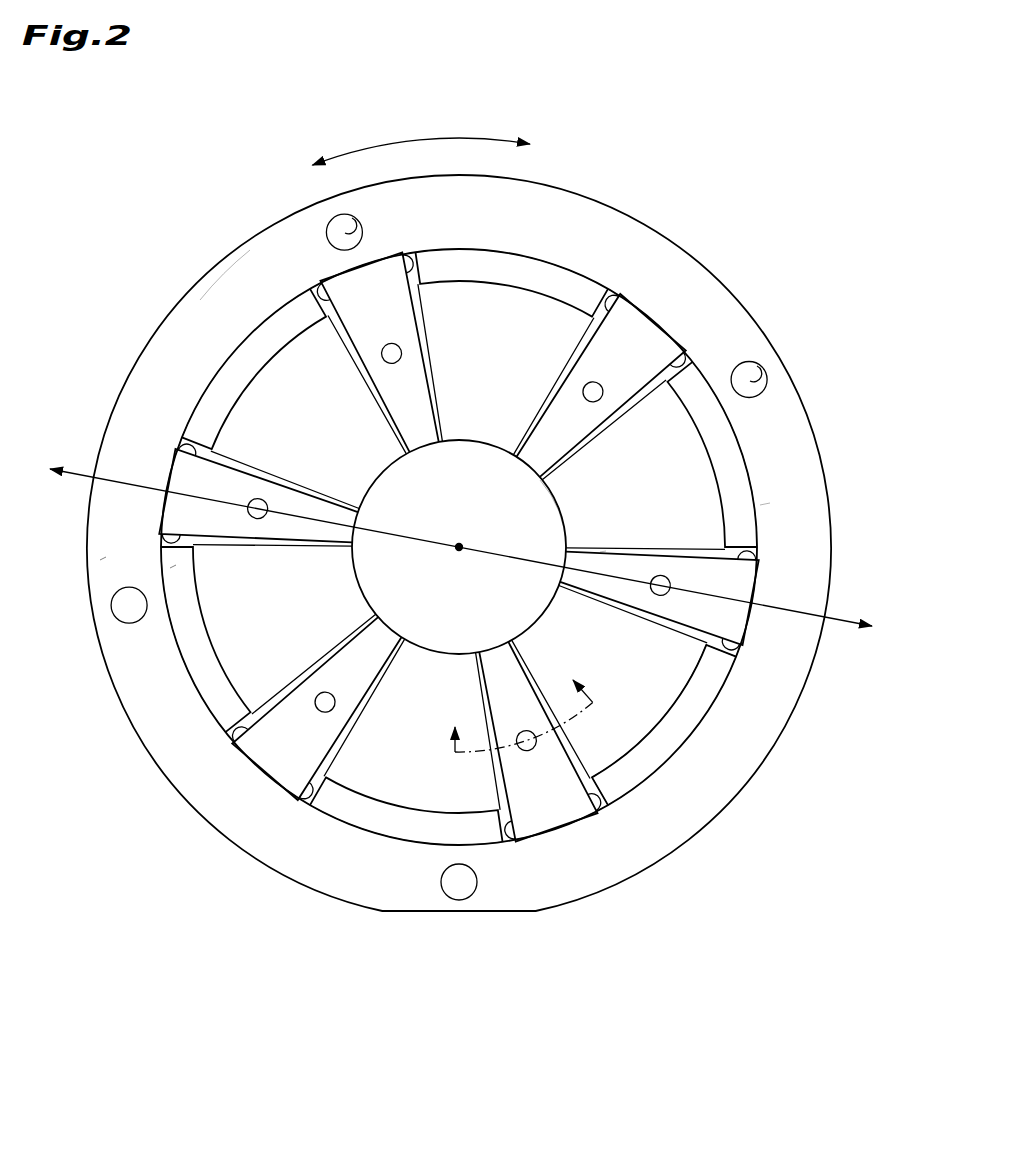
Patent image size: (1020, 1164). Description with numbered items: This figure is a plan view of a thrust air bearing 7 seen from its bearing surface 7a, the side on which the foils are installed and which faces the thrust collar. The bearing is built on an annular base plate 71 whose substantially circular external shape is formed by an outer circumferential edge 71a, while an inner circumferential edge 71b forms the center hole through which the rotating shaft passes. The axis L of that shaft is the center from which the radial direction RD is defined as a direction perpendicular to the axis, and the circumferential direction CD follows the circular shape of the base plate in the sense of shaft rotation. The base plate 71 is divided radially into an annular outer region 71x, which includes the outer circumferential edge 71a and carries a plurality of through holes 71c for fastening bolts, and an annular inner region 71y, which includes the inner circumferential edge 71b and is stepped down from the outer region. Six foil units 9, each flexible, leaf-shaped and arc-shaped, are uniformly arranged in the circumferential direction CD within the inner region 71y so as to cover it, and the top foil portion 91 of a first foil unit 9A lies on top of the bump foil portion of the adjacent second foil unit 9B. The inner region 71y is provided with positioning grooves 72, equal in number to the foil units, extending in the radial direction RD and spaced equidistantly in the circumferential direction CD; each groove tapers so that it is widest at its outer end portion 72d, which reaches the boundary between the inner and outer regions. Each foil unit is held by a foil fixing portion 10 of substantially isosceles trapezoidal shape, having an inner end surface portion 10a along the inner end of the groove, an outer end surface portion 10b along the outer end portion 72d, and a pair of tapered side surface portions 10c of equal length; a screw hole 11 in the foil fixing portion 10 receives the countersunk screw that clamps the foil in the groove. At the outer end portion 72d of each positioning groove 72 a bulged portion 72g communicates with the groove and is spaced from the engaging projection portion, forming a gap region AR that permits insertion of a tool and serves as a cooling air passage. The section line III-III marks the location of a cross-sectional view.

The thrust air bearing 7 is at (245, 229).
The bearing surface 7a is at (240, 278).
The base plate 71 is at (641, 298).
The outer circumferential edge 71a is at (692, 330).
The inner circumferential edge 71b is at (560, 500).
The through holes 71c is at (364, 230).
The outer region 71x is at (103, 558).
The inner region 71y is at (173, 566).
The positioning grooves 72 is at (768, 566).
The outer end portion 72d is at (160, 478).
The bulged portion 72g is at (750, 556).
The foil units 9 is at (738, 470).
The first foil unit 9A is at (622, 737).
The second foil unit 9B is at (432, 814).
The top foil portion 91 is at (712, 400).
The foil fixing portion 10 is at (748, 596).
The inner end surface portion 10a is at (562, 558).
The outer end surface portion 10b is at (758, 618).
The side surface portions 10c is at (332, 497).
The screw hole 11 is at (410, 358).
The axis L is at (458, 545).
The circumferential direction CD is at (416, 140).
The radial direction RD is at (847, 626).
The gap region AR is at (765, 512).
The section line III- III is at (514, 708).